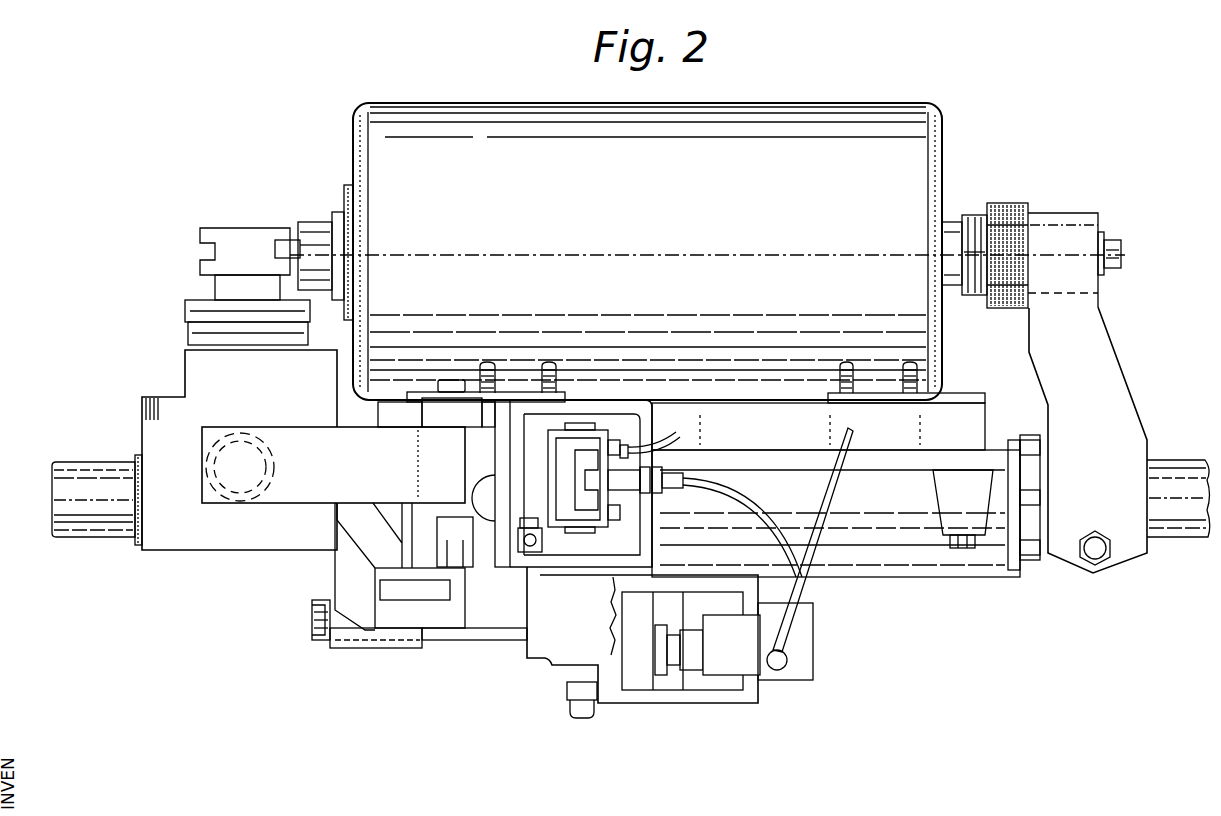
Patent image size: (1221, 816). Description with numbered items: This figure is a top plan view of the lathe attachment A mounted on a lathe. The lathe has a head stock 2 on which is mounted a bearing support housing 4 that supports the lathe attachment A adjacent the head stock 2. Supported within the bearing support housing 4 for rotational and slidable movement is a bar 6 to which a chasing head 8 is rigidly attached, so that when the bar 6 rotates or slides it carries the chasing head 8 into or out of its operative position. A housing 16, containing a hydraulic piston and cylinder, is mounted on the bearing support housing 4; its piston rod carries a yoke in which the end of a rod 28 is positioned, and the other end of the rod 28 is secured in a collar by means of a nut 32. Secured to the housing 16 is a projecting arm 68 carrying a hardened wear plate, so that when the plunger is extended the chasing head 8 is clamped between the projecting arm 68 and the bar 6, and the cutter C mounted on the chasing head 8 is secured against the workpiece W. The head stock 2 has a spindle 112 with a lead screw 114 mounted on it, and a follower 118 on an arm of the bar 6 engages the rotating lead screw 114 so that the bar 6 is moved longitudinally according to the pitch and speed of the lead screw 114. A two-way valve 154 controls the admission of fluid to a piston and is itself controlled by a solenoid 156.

The head stock 2 is at (915, 70).
The cutter C is at (228, 222).
The workpiece W is at (308, 213).
The spindle 112 is at (950, 238).
The lead screw 114 is at (972, 215).
The follower 118 is at (1006, 203).
The bar 6 is at (98, 476).
The chasing head 8 is at (212, 556).
The projecting arm 68 is at (343, 472).
The housing 16 is at (597, 392).
The rod 28 is at (492, 630).
The nut 32 is at (318, 640).
The lathe attachment A is at (547, 666).
The solenoid 156 is at (748, 657).
The two-way valve 154 is at (805, 661).
The bearing support housing 4 is at (868, 556).